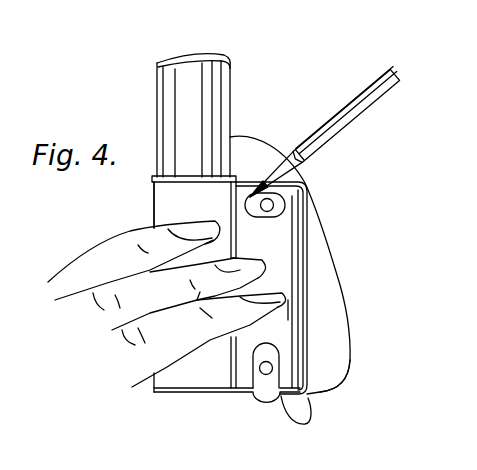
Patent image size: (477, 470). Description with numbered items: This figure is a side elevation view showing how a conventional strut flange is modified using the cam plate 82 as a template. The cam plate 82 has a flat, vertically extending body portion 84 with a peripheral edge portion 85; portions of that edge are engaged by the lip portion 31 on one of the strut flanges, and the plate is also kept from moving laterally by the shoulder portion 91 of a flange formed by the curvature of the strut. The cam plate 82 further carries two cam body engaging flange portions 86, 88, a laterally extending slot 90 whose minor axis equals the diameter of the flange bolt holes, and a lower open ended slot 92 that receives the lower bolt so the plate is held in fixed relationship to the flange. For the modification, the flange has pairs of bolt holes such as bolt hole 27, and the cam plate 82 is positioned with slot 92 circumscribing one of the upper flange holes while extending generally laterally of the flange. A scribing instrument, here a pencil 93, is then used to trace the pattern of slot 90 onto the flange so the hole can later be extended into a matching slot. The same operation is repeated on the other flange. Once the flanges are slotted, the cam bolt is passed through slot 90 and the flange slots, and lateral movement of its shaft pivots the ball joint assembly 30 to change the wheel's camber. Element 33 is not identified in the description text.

The bolt hole 27 is at (264, 377).
The ball joint assembly 30 is at (344, 328).
The lip portion 31 is at (313, 423).
The side wall 33 is at (312, 201).
The cam plate 82 is at (303, 282).
The body portion 84 is at (288, 309).
The peripheral edge portion 85 is at (290, 331).
The cam body engaging flange portion 86 is at (290, 258).
The cam body engaging flange portion 88 is at (236, 212).
The laterally extending slot 90 is at (274, 205).
The shoulder portion 91 is at (236, 181).
The lower open ended slot 92 is at (266, 355).
The pencil 93 is at (361, 95).